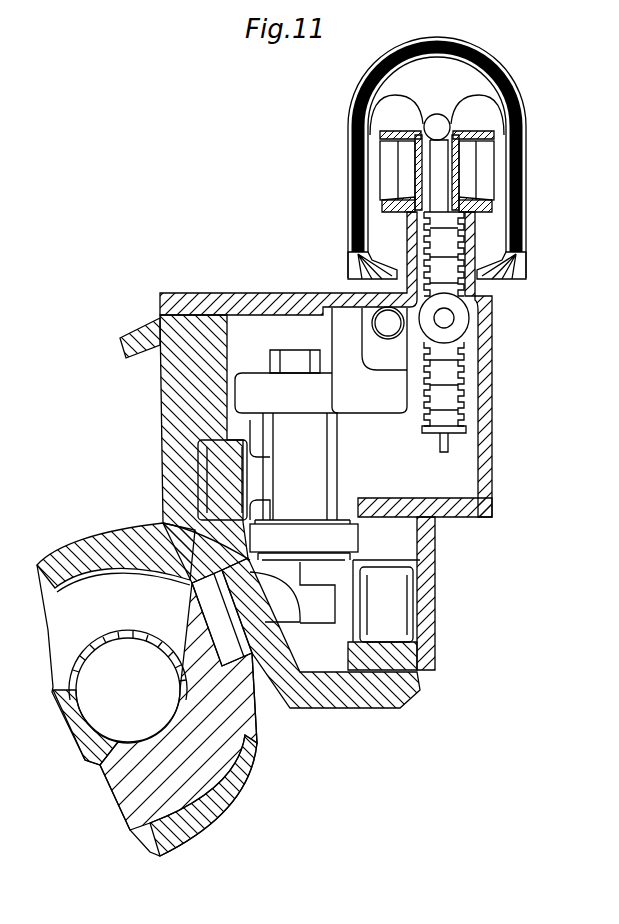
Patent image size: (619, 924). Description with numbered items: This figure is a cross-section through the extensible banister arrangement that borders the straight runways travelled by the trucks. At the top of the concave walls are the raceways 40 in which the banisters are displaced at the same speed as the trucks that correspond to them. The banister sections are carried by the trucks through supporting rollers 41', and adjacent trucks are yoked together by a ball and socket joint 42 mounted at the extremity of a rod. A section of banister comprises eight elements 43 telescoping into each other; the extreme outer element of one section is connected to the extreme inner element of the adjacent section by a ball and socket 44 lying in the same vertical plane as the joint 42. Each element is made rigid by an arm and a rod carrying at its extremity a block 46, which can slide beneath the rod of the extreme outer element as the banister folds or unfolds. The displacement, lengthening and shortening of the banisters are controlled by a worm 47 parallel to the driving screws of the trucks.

The telescoping element 43 is at (510, 84).
The ball and socket 44 is at (434, 120).
The supporting rollers 41' is at (346, 391).
The raceways 40 is at (504, 210).
The block 46 is at (440, 287).
The ball and socket joint 42 is at (446, 318).
The worm 47 is at (283, 714).